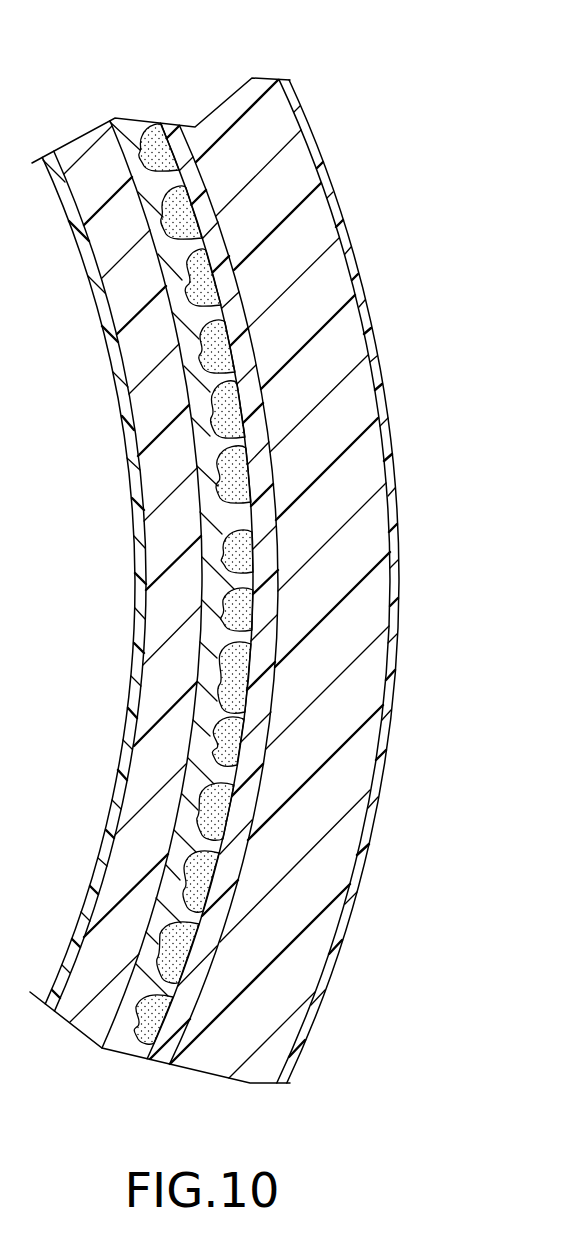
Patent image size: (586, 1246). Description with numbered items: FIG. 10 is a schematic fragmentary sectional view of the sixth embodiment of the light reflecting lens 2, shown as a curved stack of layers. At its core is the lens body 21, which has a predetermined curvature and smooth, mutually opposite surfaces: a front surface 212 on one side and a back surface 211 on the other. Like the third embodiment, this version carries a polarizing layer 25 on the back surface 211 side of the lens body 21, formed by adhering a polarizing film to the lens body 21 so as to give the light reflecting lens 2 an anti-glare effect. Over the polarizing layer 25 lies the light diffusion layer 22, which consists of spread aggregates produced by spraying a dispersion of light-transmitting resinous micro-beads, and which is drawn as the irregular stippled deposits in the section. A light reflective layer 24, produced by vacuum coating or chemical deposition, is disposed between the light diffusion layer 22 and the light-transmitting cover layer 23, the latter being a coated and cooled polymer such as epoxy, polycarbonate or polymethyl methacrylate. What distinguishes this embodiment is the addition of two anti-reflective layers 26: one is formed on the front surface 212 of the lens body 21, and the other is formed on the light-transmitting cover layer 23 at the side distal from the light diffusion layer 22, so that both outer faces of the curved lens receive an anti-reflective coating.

The light reflecting lens 2 is at (348, 76).
The lens body 21 is at (397, 490).
The back surface 211 is at (213, 187).
The front surface 212 is at (373, 318).
The light diffusion layer 22 is at (147, 128).
The light-transmitting cover layer 23 is at (173, 535).
The light reflective layer 24 is at (123, 137).
The polarizing layer 25 is at (175, 143).
The anti-reflective layers 26 is at (139, 633).